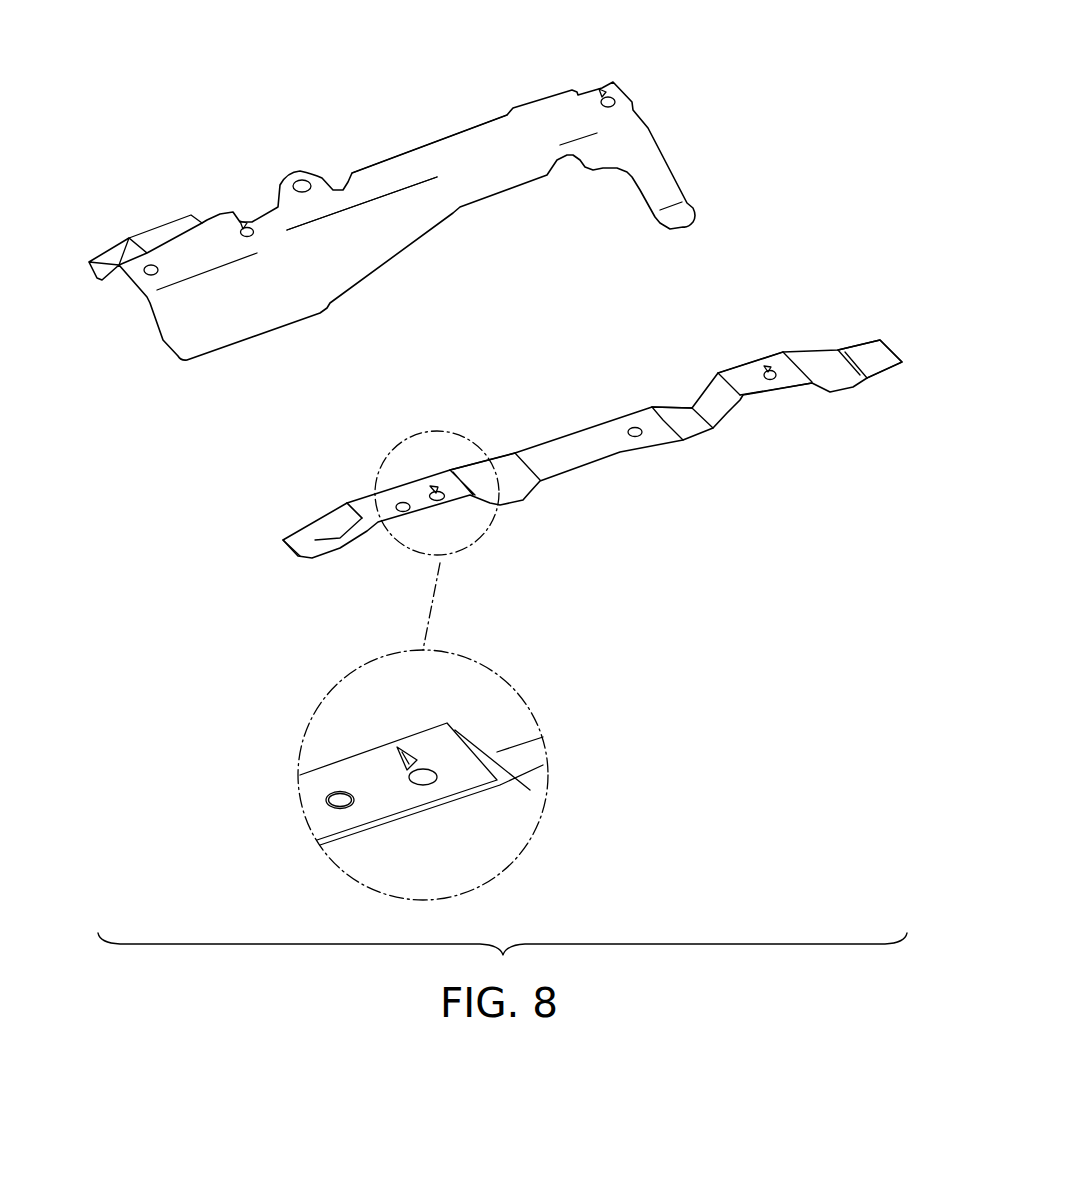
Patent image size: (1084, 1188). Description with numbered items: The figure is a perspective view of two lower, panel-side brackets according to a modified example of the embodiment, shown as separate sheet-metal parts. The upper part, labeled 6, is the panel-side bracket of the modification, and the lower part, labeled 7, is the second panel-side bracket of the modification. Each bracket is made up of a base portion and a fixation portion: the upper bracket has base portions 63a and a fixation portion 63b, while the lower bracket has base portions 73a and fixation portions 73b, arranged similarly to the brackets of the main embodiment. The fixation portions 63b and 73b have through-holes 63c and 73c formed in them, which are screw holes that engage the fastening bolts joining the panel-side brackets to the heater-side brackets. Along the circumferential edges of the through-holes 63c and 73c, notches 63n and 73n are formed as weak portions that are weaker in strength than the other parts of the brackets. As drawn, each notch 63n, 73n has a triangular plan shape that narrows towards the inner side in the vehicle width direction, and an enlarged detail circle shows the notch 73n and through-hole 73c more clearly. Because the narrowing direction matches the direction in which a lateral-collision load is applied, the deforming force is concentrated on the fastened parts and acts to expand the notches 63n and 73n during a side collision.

The first bracket (63) 6 is at (650, 130).
The base portion 63a is at (105, 262).
The fixation portion 63b is at (423, 160).
The through-hole 63c is at (248, 228).
The notch 63n is at (242, 225).
The second bracket (73) 7 is at (897, 350).
The base portion 73a is at (300, 535).
The fixation portion 73b is at (353, 498).
The through-hole 73c is at (438, 488).
The notch 73n is at (430, 483).